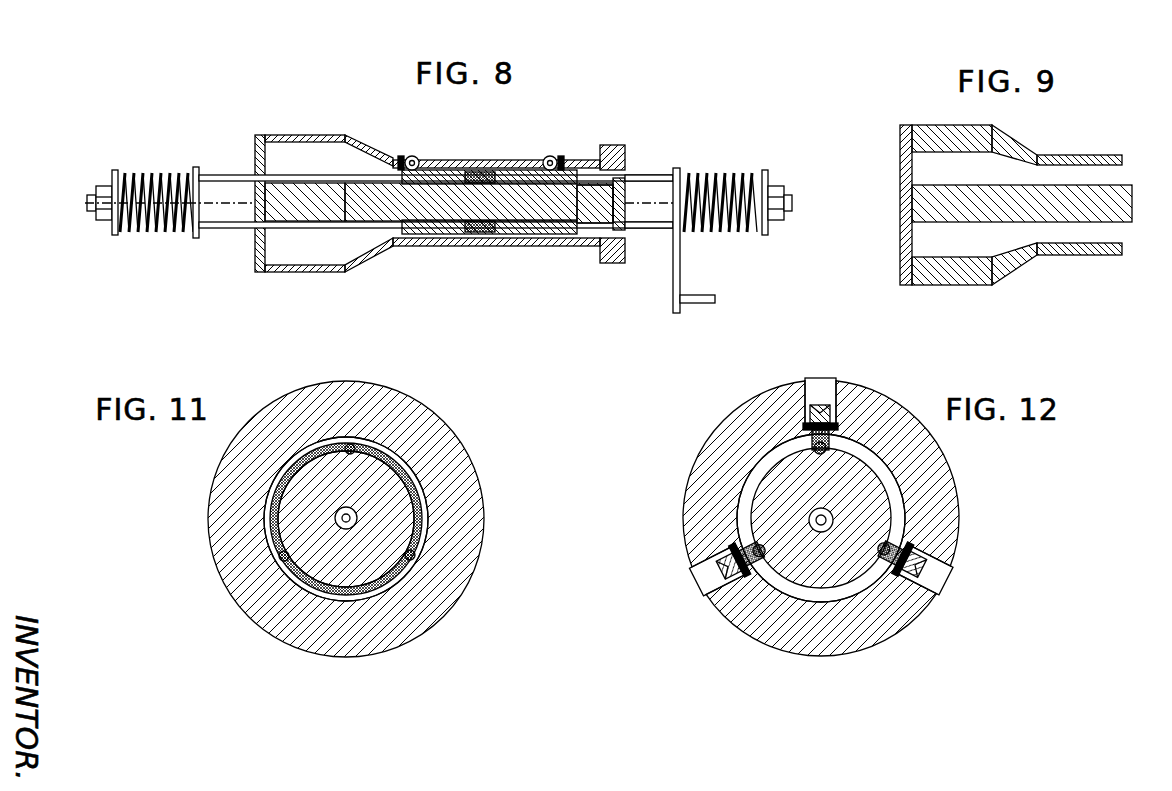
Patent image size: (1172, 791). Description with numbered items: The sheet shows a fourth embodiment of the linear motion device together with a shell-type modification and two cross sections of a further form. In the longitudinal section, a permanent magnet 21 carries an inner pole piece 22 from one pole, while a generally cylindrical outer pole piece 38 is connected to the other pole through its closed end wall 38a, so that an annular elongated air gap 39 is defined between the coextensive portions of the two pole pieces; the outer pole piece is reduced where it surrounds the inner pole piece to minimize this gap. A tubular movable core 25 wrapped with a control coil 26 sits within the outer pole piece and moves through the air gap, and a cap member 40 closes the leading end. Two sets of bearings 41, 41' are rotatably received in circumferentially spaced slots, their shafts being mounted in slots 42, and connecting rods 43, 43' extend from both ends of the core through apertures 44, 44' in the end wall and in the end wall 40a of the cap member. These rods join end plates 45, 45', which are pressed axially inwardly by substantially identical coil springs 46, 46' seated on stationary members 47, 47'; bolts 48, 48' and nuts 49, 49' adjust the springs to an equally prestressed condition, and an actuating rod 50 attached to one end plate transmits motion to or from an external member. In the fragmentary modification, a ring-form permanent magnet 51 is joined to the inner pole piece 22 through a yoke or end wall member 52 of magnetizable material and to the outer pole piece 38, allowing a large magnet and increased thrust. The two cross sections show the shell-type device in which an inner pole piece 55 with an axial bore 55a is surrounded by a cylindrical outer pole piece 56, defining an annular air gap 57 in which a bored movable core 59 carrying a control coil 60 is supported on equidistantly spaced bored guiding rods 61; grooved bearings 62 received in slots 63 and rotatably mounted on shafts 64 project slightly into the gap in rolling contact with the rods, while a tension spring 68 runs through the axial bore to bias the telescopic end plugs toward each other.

In FIG. 8, the permanent magnet 21 is at (282, 192).
In FIG. 8, the inner pole piece 22 is at (500, 228).
In FIG. 9, the inner pole piece 22 is at (1096, 225).
In FIG. 8, the tubular movable core 25 is at (430, 236).
In FIG. 8, the control coil 26 is at (482, 236).
In FIG. 8, the outer pole piece 38 is at (462, 247).
In FIG. 9, the outer pole piece 38 is at (1018, 262).
In FIG. 8, the closed end wall 38a is at (258, 271).
In FIG. 8, the annular elongated air gap 39 is at (392, 247).
In FIG. 8, the cap member 40 is at (590, 226).
In FIG. 8, the end wall of cap member 40a is at (618, 236).
In FIG. 8, the bearings 41 is at (430, 140).
In FIG. 8, the bearings 41' is at (535, 140).
In FIG. 8, the slots 42 is at (400, 157).
In FIG. 8, the connecting rods 43 is at (429, 208).
In FIG. 8, the connecting rods 43' is at (651, 202).
In FIG. 8, the apertures 44 is at (235, 184).
In FIG. 8, the apertures 44' is at (635, 202).
In FIG. 8, the end plate 45 is at (195, 180).
In FIG. 8, the end plate 45' is at (708, 257).
In FIG. 8, the coil spring 46 is at (156, 226).
In FIG. 8, the coil spring 46' is at (720, 187).
In FIG. 8, the stationary member 47 is at (92, 216).
In FIG. 8, the stationary member 47' is at (788, 215).
In FIG. 8, the bolt 48 is at (127, 171).
In FIG. 8, the bolt 48' is at (804, 198).
In FIG. 8, the nut 49 is at (85, 176).
In FIG. 8, the nut 49' is at (790, 176).
In FIG. 8, the actuating rod 50 is at (676, 300).
In FIG. 9, the permanent magnet 51 is at (955, 280).
In FIG. 9, the yoke or end wall member 52 is at (902, 264).
In FIG. 11, the inner pole piece 55 is at (424, 500).
In FIG. 12, the inner pole piece 55 is at (890, 484).
In FIG. 12, the axial bore 55a is at (838, 536).
In FIG. 11, the outer pole piece 56 is at (480, 526).
In FIG. 12, the outer pole piece 56 is at (958, 502).
In FIG. 12, the annular elongated air gap 57 is at (824, 600).
In FIG. 11, the bored movable core 59 is at (352, 592).
In FIG. 11, the control coil 60 is at (345, 595).
In FIG. 11, the bored guiding rods 61 is at (354, 444).
In FIG. 12, the bearings 62 is at (826, 408).
In FIG. 12, the slots 63 is at (810, 405).
In FIG. 12, the shafts 64 is at (838, 426).
In FIG. 11, the tension spring 68 is at (342, 510).
In FIG. 12, the tension spring 68 is at (819, 508).